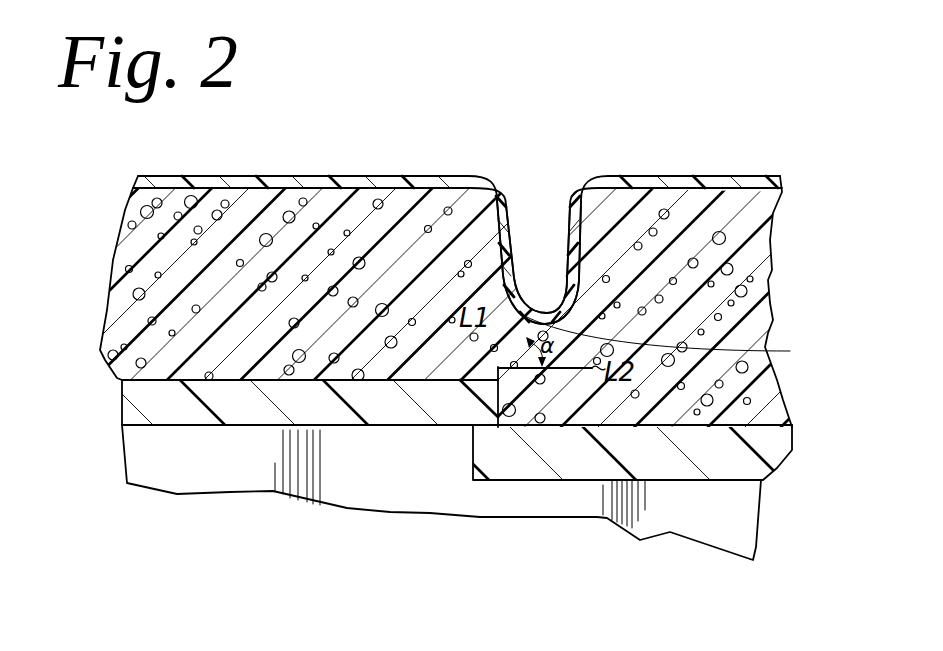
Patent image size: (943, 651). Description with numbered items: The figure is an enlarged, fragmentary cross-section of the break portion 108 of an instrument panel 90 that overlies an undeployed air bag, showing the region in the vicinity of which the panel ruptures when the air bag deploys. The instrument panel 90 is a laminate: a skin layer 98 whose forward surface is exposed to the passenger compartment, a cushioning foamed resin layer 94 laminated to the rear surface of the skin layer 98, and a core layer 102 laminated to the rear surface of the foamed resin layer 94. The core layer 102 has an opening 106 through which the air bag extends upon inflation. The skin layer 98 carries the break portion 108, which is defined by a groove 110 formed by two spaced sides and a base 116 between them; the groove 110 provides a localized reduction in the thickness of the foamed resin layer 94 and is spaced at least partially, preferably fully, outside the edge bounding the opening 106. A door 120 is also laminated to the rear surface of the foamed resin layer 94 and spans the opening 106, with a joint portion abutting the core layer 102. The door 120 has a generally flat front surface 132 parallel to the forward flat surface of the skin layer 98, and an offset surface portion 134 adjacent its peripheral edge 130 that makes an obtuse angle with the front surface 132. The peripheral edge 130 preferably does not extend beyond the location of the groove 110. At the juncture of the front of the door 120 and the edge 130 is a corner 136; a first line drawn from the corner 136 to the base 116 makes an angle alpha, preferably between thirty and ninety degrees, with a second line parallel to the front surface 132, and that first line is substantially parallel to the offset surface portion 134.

The instrument panel 90 is at (834, 245).
The foamed resin layer 94 is at (762, 243).
The skin layer 98 is at (657, 179).
The core layer 102 is at (717, 470).
The opening 106 is at (473, 463).
The break portion 108 is at (540, 195).
The groove 110 is at (521, 224).
The base 116 is at (790, 351).
The door 120 is at (379, 408).
The peripheral edge 130 is at (518, 392).
The front surface 132 is at (164, 380).
The offset surface portion 134 is at (440, 329).
The corner 136 is at (440, 329).